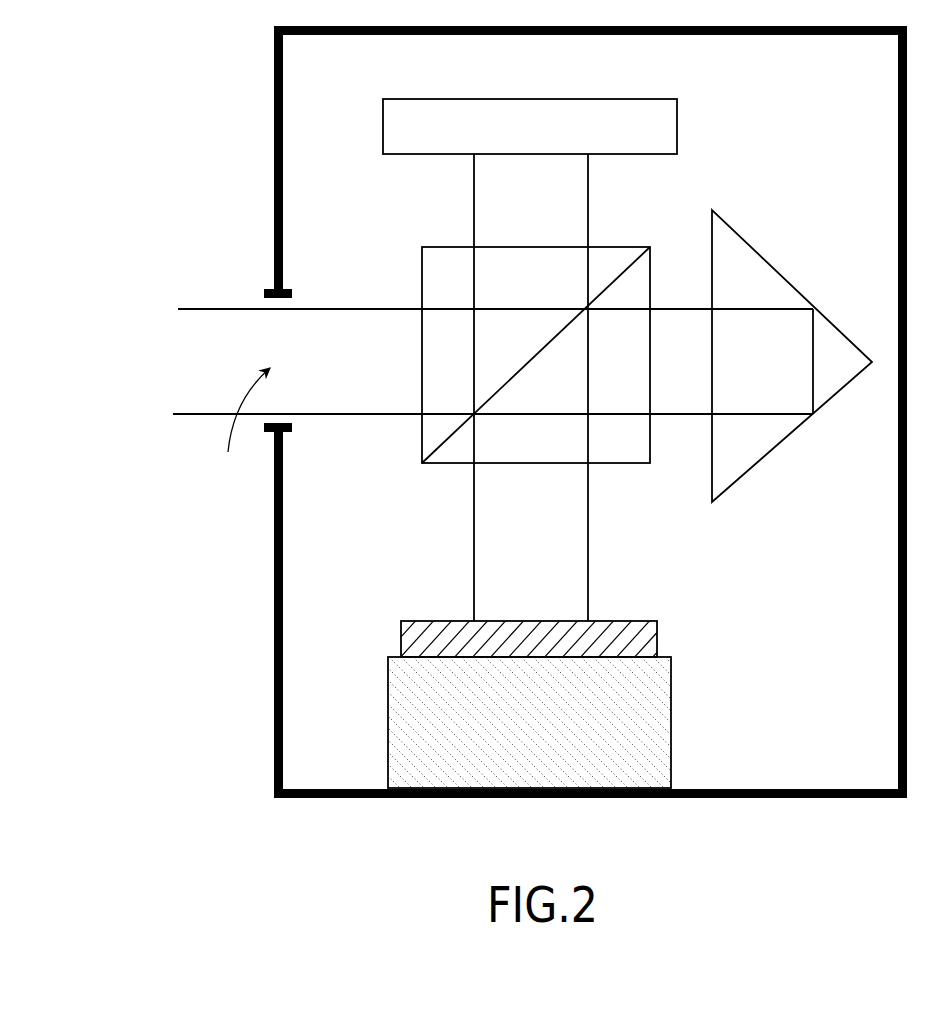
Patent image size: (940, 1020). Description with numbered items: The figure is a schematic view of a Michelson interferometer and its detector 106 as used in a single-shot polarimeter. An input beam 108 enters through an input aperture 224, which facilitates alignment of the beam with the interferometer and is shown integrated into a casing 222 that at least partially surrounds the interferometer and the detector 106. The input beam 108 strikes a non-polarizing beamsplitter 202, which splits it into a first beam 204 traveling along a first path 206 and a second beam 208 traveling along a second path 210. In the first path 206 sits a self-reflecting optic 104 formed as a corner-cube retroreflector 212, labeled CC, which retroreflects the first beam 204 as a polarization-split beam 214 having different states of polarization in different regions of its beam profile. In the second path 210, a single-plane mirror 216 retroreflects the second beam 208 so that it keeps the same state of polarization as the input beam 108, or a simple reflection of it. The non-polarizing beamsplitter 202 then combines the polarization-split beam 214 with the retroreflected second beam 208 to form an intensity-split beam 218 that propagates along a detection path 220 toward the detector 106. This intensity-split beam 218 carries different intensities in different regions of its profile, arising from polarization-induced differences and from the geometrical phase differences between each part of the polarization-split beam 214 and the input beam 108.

The self-reflecting optic 104 is at (793, 287).
The detector 106 is at (660, 630).
The input beam 108 is at (193, 358).
The non-polarizing beamsplitter 202 is at (422, 463).
The first beam 204 is at (693, 414).
The first path 206 is at (692, 330).
The second beam 208 is at (474, 222).
The second path 210 is at (515, 192).
The corner-cube retroreflector 212 is at (813, 414).
The polarization-split beam 214 is at (680, 414).
The single-plane mirror 216 is at (463, 99).
The intensity-split beam 218 is at (474, 504).
The detection path 220 is at (515, 582).
The casing 222 is at (274, 150).
The input aperture 224 is at (240, 423).